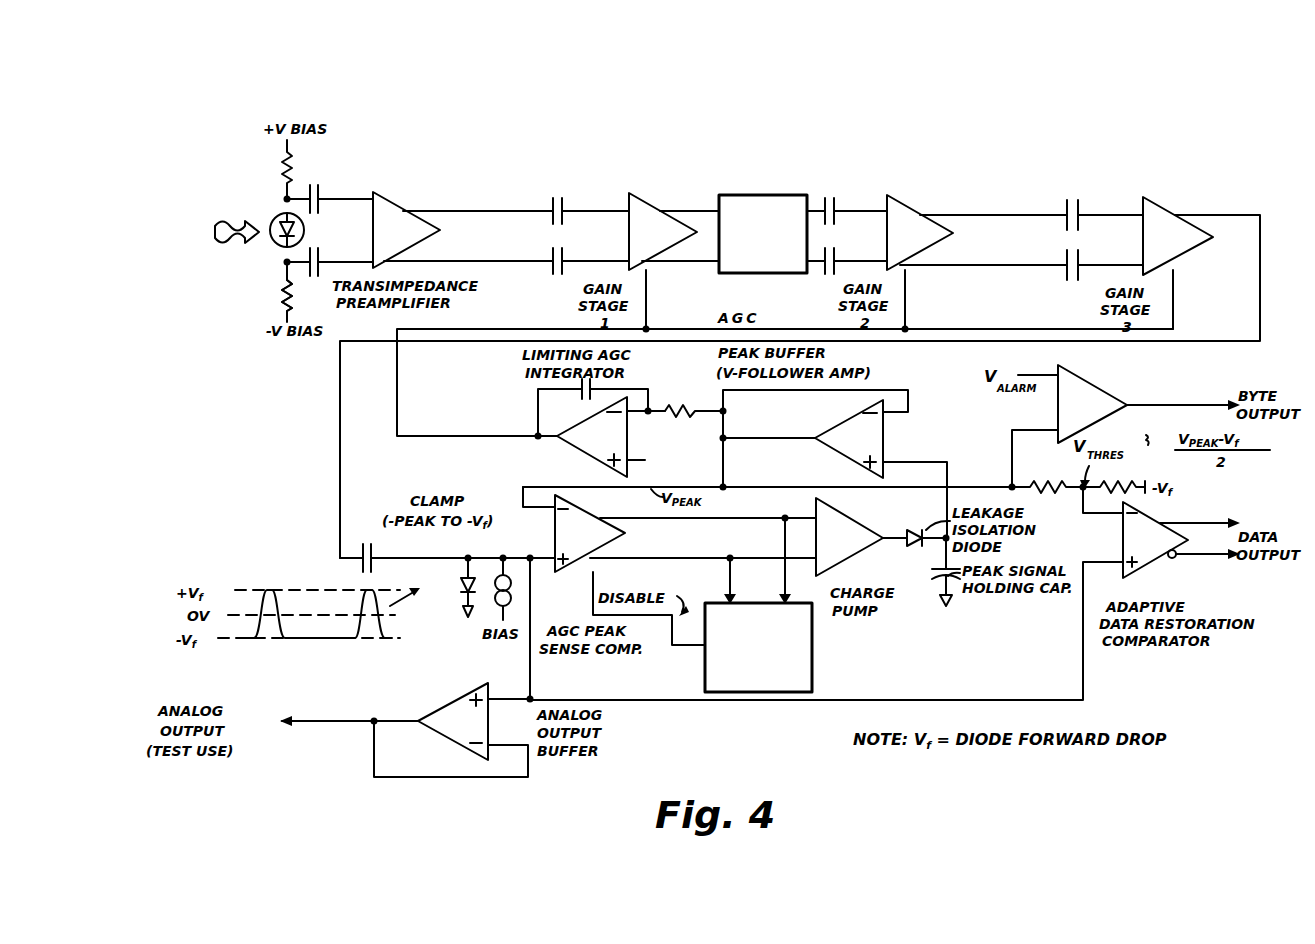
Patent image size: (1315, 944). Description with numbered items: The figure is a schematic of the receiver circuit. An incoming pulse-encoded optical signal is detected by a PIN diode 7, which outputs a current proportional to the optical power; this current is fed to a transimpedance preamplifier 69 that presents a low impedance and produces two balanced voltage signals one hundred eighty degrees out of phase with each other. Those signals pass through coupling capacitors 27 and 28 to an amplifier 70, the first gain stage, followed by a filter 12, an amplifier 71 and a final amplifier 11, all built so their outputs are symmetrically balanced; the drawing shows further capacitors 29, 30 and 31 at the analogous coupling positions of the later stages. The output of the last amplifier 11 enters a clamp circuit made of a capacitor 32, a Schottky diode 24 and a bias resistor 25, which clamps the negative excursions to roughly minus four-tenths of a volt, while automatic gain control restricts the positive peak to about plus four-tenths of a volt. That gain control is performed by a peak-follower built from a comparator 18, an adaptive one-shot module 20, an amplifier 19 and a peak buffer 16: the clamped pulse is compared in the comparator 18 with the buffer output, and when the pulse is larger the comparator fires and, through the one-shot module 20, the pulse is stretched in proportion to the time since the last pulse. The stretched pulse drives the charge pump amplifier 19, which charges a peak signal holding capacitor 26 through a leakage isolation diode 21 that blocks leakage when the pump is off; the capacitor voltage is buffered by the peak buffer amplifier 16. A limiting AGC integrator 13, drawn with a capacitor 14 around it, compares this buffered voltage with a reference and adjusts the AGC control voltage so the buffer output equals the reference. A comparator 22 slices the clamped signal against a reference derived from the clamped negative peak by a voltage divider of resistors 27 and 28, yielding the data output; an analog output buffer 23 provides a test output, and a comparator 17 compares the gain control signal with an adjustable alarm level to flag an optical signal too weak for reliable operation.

The PIN diode 7 is at (272, 214).
The Schottky diode 24 is at (282, 292).
The bias resistor 25 is at (313, 199).
The peak signal holding capacitor 26 is at (318, 262).
The transimpedance preamplifier 69 is at (396, 205).
The coupling capacitor 27 is at (557, 201).
The coupling capacitor 28 is at (558, 277).
The amplifier 70 is at (652, 204).
The filter 12 is at (770, 195).
The coupling capacitor 29 is at (831, 200).
The coupling capacitor 30 is at (828, 276).
The amplifier 71 is at (908, 210).
The coupling capacitor 31 is at (1071, 203).
The capacitor 32 is at (1070, 279).
The amplifier 11 is at (1163, 210).
The limiting AGC integrator 13 is at (571, 453).
The integrator capacitor 14 is at (580, 396).
The peak buffer amplifier 16 is at (885, 438).
The comparator 17 is at (1108, 393).
The AGC peak comparator 18 is at (582, 515).
The charge pump amplifier 19 is at (858, 522).
The adaptive one-shot module 20 is at (812, 651).
The leakage isolation diode 21 is at (914, 529).
The comparator 22 is at (1121, 538).
The analog output buffer 23 is at (458, 700).